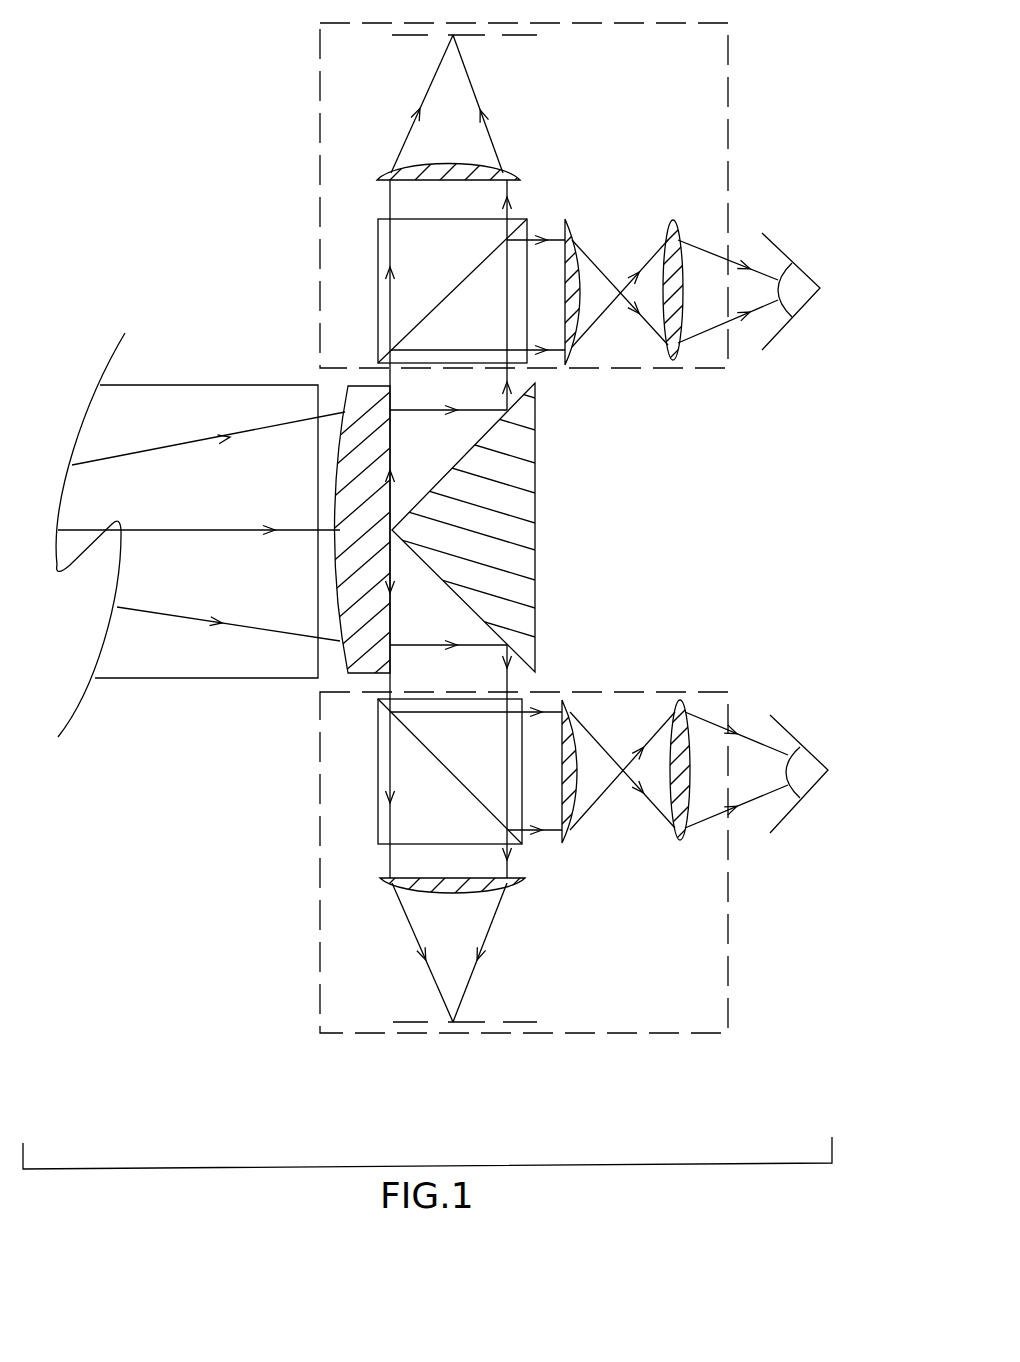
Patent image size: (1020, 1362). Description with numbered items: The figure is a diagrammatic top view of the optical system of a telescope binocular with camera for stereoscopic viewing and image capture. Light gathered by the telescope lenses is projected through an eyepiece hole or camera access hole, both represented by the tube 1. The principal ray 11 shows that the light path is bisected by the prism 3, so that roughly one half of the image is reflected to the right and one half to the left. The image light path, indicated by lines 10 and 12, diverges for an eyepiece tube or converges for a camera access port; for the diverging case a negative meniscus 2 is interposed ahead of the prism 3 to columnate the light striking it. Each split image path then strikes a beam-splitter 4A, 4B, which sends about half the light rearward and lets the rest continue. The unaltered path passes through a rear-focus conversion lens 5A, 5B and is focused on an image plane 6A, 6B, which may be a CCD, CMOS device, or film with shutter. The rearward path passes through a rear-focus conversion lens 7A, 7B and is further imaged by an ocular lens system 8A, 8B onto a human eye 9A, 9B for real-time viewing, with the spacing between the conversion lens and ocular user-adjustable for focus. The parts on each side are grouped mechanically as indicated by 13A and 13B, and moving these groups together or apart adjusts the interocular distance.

The tube 1 is at (185, 685).
The negative meniscus 2 is at (367, 402).
The prism 3 is at (515, 533).
The beam-splitter 4A is at (372, 255).
The beam-splitter 4B is at (372, 755).
The rear-focus conversion lens 5A is at (480, 175).
The rear-focus conversion lens 5B is at (497, 882).
The image plane 6A is at (510, 35).
The image plane 6B is at (513, 1020).
The rear-focus conversion lens 7A is at (570, 248).
The rear-focus conversion lens 7B is at (568, 810).
The ocular lens system 8A is at (672, 238).
The ocular lens system 8B is at (682, 837).
The human eye 9A is at (800, 287).
The human eye 9B is at (808, 770).
The image light path line 10 is at (100, 459).
The principal ray 11 is at (177, 530).
The image light path line 12 is at (180, 615).
The mechanical grouping 13A is at (310, 102).
The mechanical grouping 13B is at (310, 873).